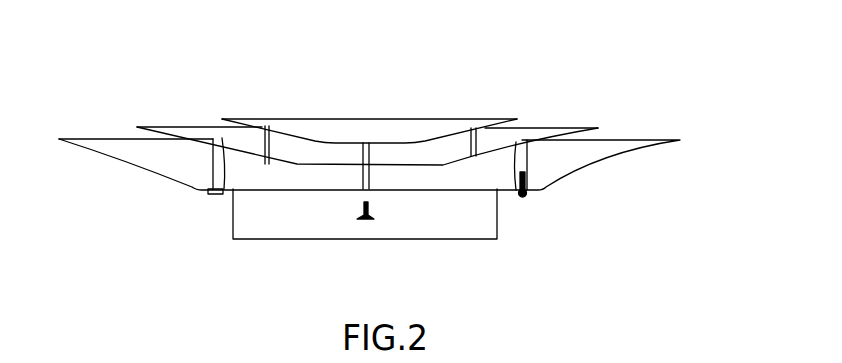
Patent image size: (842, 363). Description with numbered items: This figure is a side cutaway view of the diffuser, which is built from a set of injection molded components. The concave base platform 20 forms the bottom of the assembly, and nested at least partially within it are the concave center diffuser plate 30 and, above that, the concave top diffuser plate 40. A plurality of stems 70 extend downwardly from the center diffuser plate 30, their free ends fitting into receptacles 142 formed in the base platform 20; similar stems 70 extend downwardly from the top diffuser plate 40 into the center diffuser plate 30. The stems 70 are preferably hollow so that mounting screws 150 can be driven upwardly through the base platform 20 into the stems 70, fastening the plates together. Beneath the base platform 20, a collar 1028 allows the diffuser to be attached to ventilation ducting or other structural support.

The concave base platform 20 is at (684, 122).
The concave center diffuser plate 30 is at (526, 131).
The concave top diffuser plate 40 is at (365, 136).
The stems 70 is at (217, 168).
The receptacles 142 is at (215, 196).
The mounting screws 150 is at (367, 229).
The collar 1028 is at (514, 223).